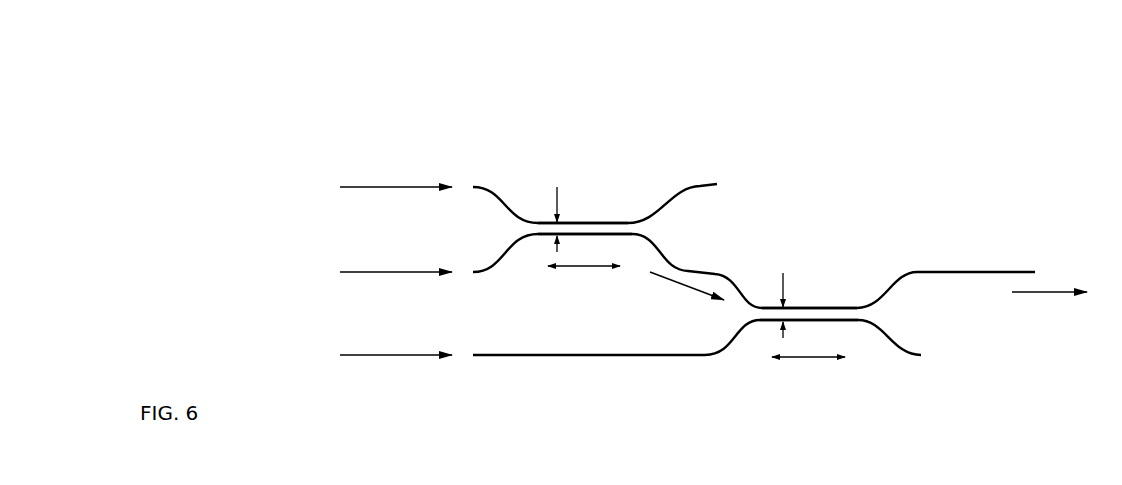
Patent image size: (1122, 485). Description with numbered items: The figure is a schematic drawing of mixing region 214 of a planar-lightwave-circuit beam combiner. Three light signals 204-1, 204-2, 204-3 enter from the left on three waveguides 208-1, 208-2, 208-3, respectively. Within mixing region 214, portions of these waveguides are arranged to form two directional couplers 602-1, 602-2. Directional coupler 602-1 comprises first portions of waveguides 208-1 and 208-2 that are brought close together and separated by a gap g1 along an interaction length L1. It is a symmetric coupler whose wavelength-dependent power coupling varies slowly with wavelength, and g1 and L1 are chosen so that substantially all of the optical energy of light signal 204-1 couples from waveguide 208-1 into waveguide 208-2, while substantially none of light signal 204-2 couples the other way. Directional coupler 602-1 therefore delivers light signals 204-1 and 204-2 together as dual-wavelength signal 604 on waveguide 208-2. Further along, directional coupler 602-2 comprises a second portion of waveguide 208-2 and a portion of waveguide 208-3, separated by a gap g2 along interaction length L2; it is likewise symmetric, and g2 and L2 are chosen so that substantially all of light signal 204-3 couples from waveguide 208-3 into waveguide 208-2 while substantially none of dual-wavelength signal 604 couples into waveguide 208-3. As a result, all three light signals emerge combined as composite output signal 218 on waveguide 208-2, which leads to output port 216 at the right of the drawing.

The mixing region 214 is at (468, 100).
The light signal 204-1 is at (362, 186).
The light signal 204-2 is at (362, 271).
The light signal 204-3 is at (362, 354).
The waveguide 208-1 is at (478, 187).
The waveguide 208-2 is at (478, 272).
The waveguide 208-3 is at (484, 355).
The directional coupler 602-1 is at (585, 204).
The directional coupler 602-2 is at (820, 275).
The dual-wavelength signal 604 is at (658, 278).
The output port 216 is at (1015, 270).
The composite output signal 218 is at (1062, 295).